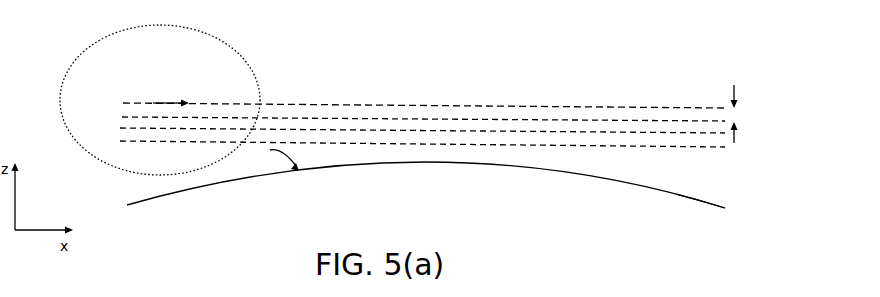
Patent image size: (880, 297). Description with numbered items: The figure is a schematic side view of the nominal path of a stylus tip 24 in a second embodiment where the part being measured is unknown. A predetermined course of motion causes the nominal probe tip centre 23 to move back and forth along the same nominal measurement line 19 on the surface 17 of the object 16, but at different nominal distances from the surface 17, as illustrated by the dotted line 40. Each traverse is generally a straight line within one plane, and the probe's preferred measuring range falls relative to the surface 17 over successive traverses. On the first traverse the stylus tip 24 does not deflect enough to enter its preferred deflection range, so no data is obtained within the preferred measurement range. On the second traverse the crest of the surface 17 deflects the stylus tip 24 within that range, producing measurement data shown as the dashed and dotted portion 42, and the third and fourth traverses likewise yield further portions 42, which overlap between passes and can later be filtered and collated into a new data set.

The object 16 is at (408, 200).
The surface 17 is at (708, 193).
The nominal measurement line 19 is at (269, 158).
The nominal probe tip centre 23 is at (153, 103).
The stylus tip 24 is at (240, 57).
The dotted line 40 is at (637, 108).
The dashed and dotted portion 42 is at (148, 143).